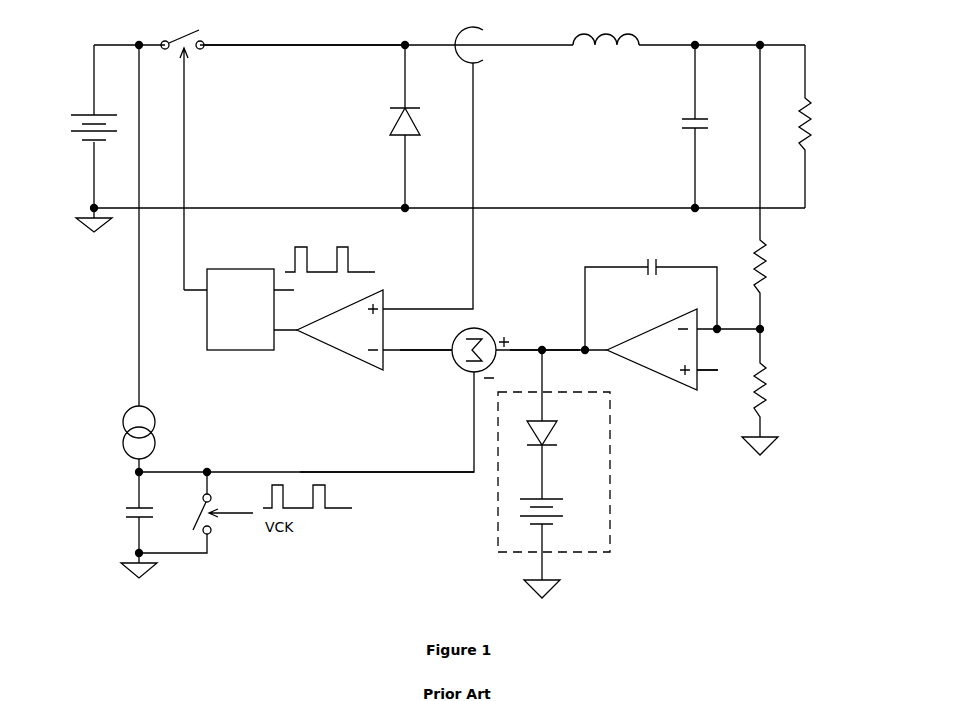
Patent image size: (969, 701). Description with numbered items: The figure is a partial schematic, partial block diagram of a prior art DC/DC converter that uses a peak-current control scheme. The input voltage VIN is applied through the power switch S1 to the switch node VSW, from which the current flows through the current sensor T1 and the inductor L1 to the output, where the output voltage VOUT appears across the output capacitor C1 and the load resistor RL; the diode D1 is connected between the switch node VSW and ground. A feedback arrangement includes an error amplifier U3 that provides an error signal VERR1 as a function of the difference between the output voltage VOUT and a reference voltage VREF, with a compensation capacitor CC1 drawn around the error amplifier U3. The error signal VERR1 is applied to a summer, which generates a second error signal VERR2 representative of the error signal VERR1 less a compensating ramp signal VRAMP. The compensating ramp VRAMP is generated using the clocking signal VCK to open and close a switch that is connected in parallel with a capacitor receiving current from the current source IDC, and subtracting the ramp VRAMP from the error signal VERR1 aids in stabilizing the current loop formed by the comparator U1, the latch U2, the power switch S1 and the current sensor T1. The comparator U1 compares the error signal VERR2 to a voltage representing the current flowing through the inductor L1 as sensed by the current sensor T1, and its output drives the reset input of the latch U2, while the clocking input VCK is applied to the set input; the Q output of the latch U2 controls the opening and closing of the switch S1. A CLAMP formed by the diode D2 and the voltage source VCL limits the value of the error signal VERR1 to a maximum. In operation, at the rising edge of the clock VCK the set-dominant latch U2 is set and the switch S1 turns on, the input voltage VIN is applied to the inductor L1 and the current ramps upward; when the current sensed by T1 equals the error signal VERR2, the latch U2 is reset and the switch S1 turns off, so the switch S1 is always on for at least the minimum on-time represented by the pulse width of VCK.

The input voltage VIN is at (78, 127).
The switch S1 is at (182, 149).
The switch node voltage VSW is at (304, 35).
The diode D1 is at (390, 127).
The current sensor T1 is at (433, 158).
The inductor L1 is at (606, 28).
The output capacitor C1 is at (708, 127).
The output voltage VOUT is at (784, 36).
The load resistor RL is at (820, 126).
The latch U2 is at (240, 323).
The clocking input VCK is at (330, 272).
The comparator U1 is at (374, 332).
The error signal VERR2 is at (421, 342).
The error signal VERR1 is at (545, 341).
The compensating ramp signal VRAMP is at (387, 464).
The compensation capacitor CC1 is at (651, 299).
The error amplifier U3 is at (685, 348).
The reference voltage VREF is at (717, 362).
The DC current source IDC is at (155, 439).
The clamp CLAMP is at (581, 474).
The diode D2 is at (556, 424).
The voltage source VCL is at (558, 547).